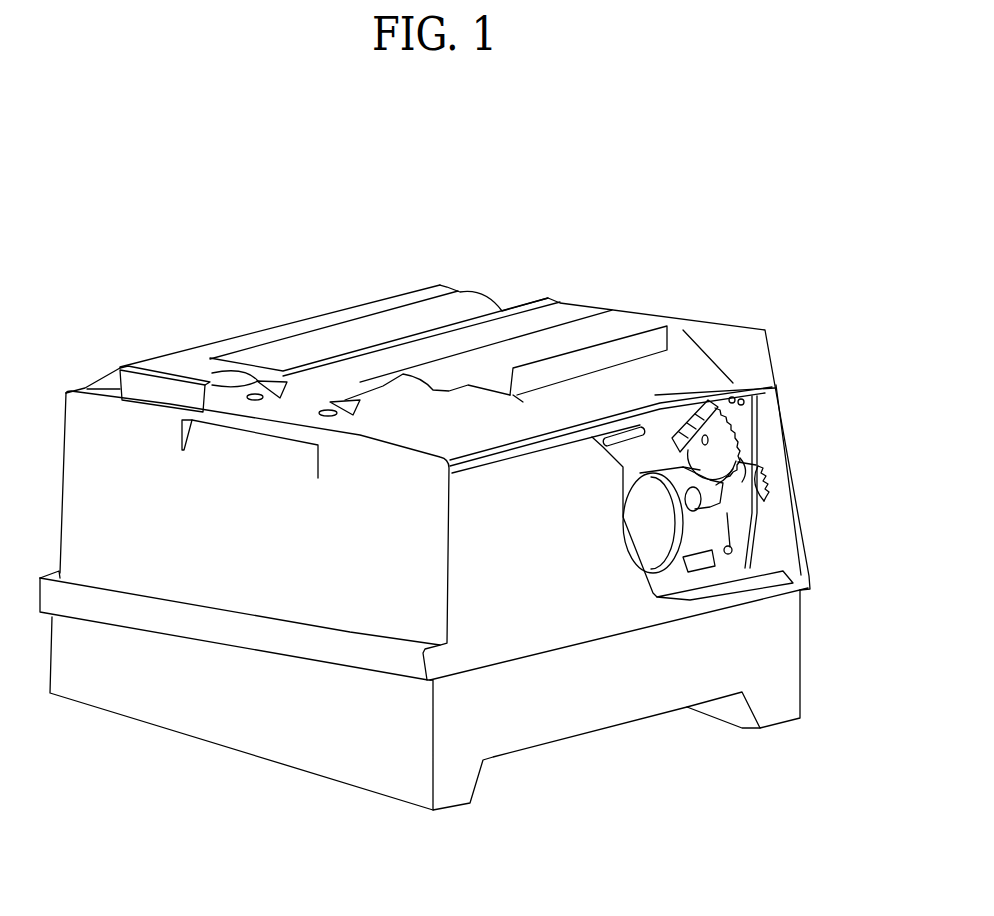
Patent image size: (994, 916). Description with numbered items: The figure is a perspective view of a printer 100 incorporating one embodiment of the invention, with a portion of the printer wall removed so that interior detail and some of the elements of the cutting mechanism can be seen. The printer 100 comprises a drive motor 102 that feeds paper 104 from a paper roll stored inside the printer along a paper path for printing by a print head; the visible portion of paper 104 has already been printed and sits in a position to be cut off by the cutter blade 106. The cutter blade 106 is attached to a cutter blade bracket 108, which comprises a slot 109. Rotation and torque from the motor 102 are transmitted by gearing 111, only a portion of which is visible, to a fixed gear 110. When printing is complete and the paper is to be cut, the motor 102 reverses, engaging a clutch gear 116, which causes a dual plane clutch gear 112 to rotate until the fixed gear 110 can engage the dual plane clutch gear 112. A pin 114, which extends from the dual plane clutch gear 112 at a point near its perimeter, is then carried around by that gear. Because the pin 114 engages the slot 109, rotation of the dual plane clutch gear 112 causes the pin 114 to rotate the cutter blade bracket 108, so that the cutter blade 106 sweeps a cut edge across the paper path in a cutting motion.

The printer 100 is at (197, 753).
The drive motor 102 is at (727, 548).
The paper 104 is at (652, 332).
The cutter blade 106 is at (672, 450).
The cutter blade bracket 108 is at (705, 436).
The slot 109 is at (709, 441).
The fixed gear 110 is at (727, 507).
The gearing 111 is at (767, 487).
The dual plane clutch gear 112 is at (742, 462).
The pin 114 is at (700, 370).
The clutch gear 116 is at (730, 507).